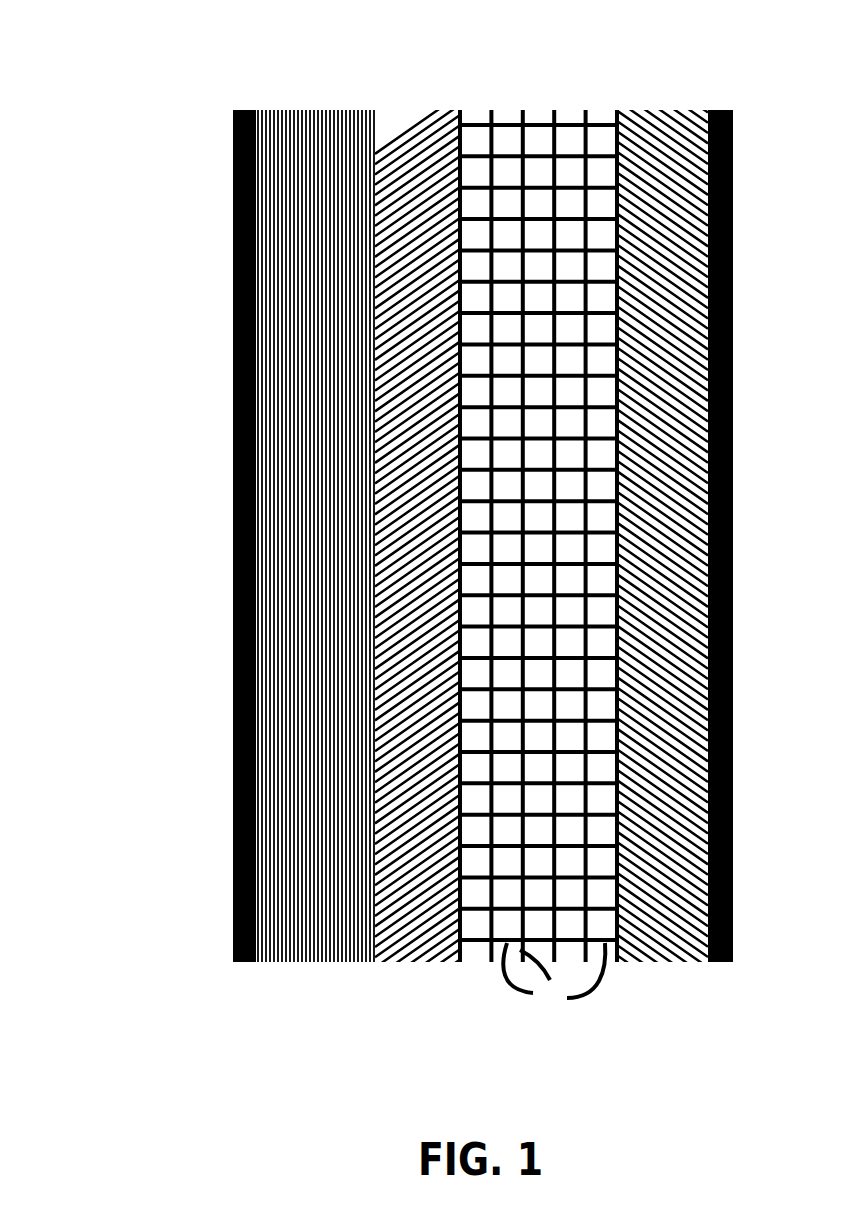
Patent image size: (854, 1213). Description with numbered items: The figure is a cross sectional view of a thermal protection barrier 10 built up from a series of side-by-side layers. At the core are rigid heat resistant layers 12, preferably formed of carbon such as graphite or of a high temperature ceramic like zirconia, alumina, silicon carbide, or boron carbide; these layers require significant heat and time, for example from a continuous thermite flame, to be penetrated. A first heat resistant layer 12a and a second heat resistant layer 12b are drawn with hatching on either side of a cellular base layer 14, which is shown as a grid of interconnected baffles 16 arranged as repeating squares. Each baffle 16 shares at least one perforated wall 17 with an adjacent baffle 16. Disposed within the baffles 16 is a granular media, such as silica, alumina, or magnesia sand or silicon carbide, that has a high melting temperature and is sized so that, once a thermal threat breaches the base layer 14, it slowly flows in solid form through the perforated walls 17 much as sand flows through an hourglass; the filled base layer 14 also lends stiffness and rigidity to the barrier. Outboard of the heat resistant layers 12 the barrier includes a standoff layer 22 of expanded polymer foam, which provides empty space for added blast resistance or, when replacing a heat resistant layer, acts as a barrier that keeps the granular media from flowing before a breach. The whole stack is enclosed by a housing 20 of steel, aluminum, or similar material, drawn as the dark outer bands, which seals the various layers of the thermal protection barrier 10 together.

The thermal protection barrier 10 is at (122, 192).
The heat resistant layers 12 is at (541, 544).
The first heat resistant layer 12a is at (386, 92).
The second heat resistant layer 12b is at (654, 92).
The cellular base layer 14 is at (538, 509).
The baffles 16 is at (598, 120).
The perforated wall 17 is at (554, 977).
The housing 20 is at (239, 980).
The standoff layers 22 is at (309, 980).